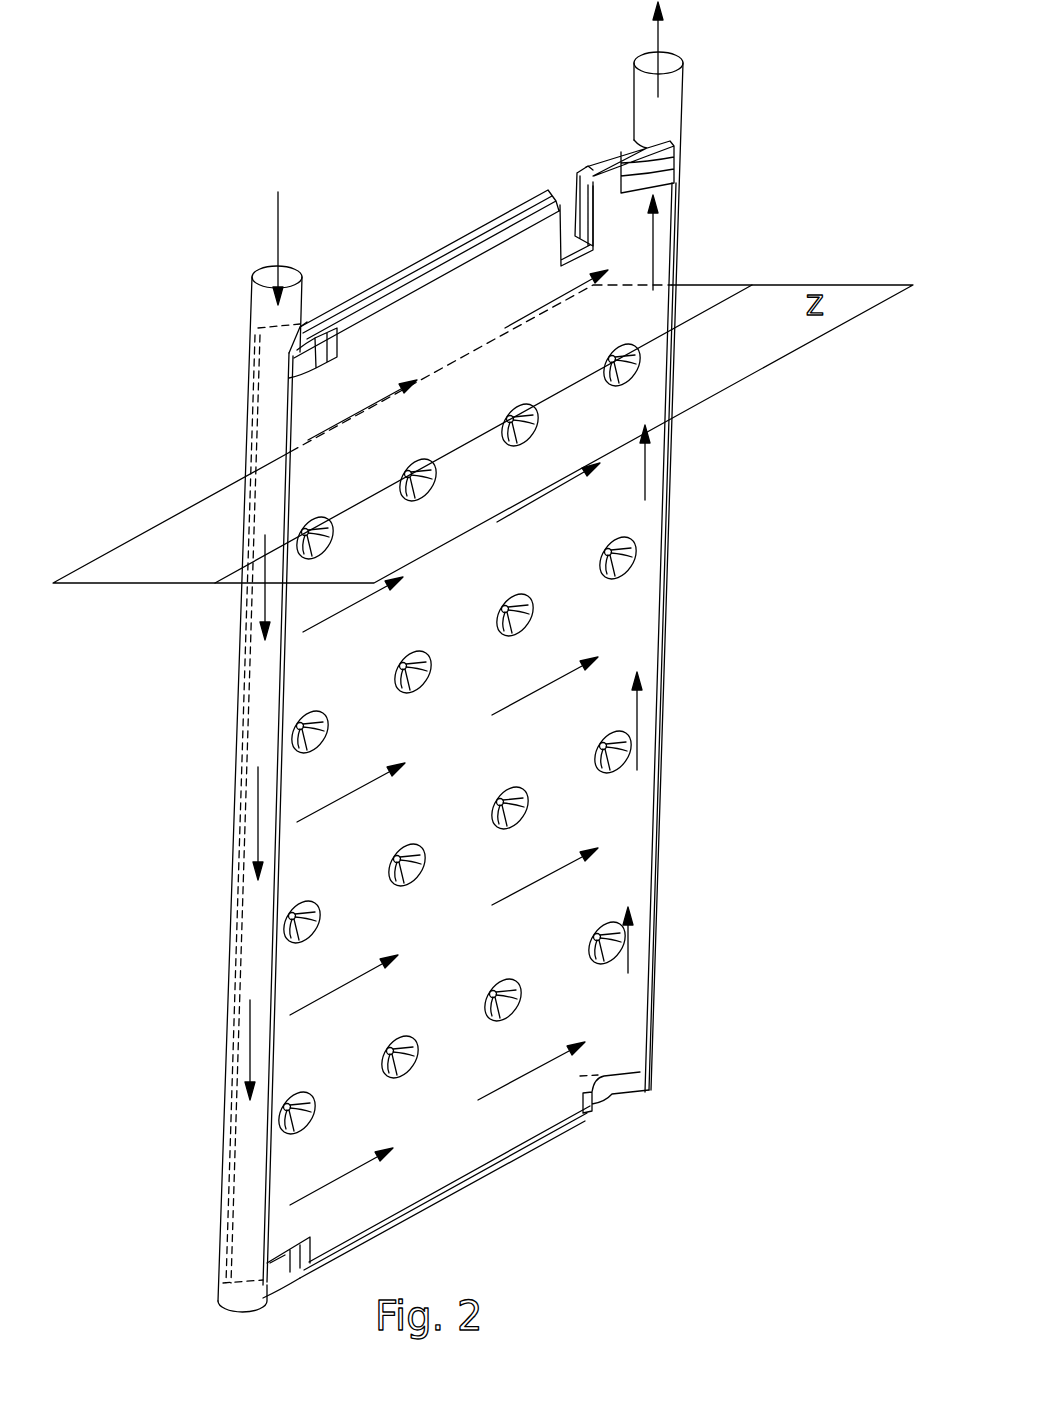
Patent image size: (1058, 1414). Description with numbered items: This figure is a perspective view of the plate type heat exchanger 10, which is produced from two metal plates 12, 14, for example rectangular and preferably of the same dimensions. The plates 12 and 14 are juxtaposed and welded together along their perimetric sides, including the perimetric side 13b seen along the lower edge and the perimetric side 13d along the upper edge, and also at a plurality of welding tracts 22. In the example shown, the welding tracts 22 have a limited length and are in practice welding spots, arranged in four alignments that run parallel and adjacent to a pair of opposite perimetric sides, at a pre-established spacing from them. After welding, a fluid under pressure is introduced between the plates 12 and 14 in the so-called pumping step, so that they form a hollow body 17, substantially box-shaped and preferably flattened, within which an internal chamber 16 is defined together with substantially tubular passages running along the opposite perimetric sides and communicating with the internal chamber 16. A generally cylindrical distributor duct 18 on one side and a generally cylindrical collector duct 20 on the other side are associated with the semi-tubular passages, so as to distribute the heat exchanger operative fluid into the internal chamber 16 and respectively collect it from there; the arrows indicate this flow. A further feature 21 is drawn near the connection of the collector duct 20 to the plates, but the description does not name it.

The plate type heat exchanger 10 is at (182, 156).
The metal plate 12 is at (390, 288).
The perimetric side 13b is at (452, 1203).
The perimetric side 13d is at (427, 249).
The metal plate 14 is at (337, 332).
The internal chamber 16 is at (583, 228).
The hollow body 17 is at (457, 318).
The distributor duct 18 is at (252, 305).
The collector duct 20 is at (683, 95).
The manifold duct 21 is at (612, 129).
The welding tracts 22 is at (327, 547).